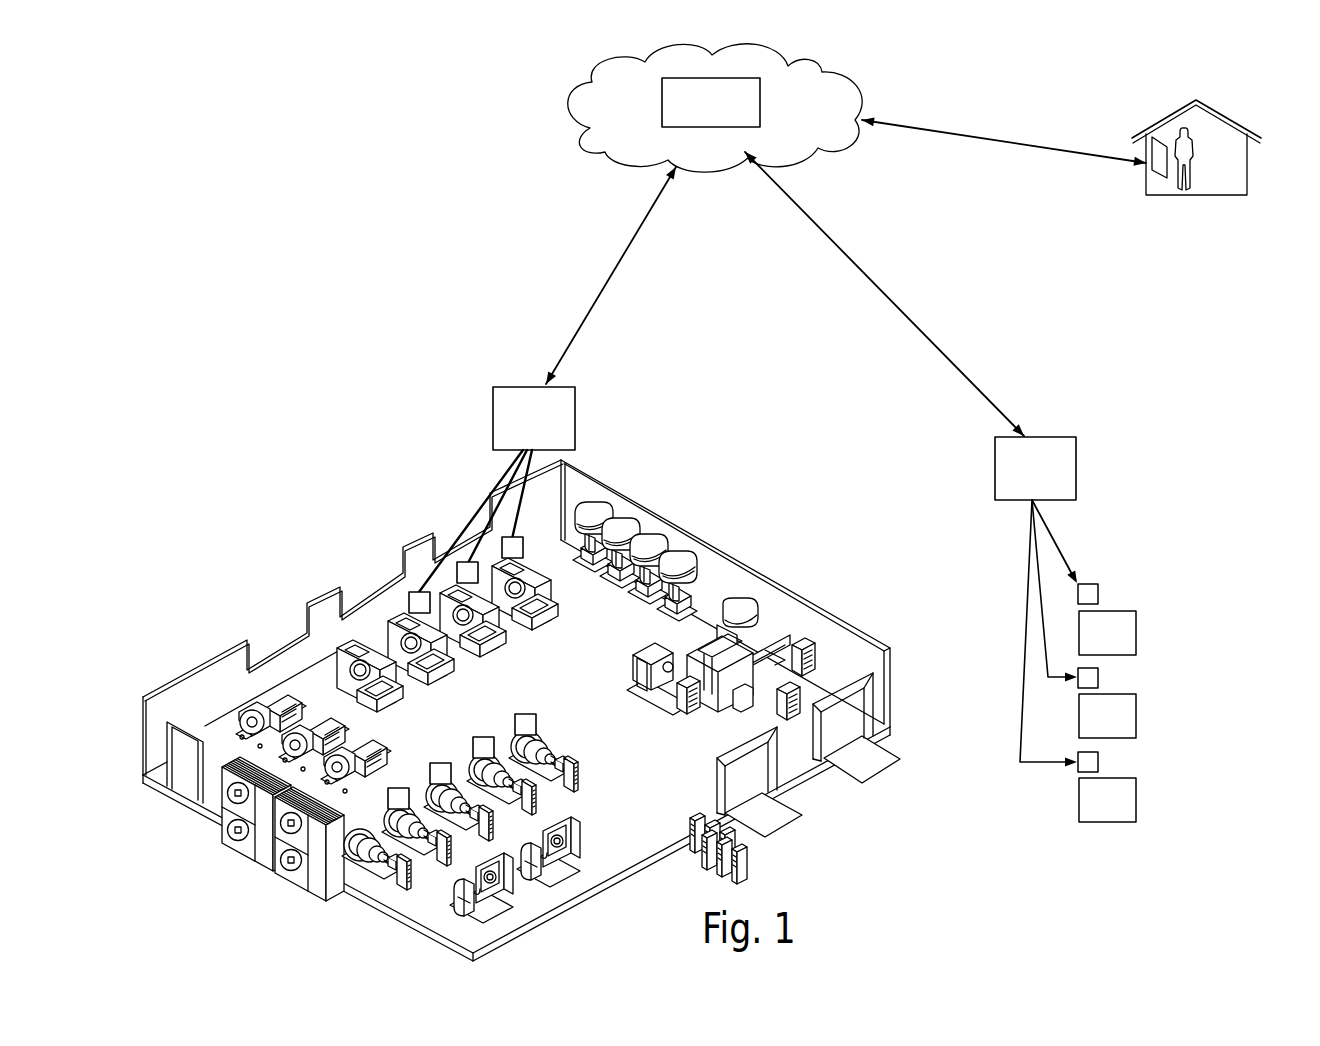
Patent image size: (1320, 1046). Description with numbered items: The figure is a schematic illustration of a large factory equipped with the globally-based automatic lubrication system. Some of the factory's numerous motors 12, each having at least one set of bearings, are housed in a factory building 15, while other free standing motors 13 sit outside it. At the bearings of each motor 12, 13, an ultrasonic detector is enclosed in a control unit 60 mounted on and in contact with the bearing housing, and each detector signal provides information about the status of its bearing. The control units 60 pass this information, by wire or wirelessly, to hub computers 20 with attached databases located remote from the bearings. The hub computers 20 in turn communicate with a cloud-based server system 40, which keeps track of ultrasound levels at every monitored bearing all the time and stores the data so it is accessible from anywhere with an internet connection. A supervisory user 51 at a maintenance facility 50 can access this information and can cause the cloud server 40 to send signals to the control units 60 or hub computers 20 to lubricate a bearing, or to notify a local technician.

The motor 12 is at (340, 653).
The free standing motor 13 is at (1094, 647).
The factory building 15 is at (663, 695).
The hub computer 20 is at (520, 432).
The cloud-based server system 40 is at (696, 117).
The maintenance facility 50 is at (1160, 118).
The supervisory user 51 is at (1197, 183).
The control unit 60 is at (412, 592).